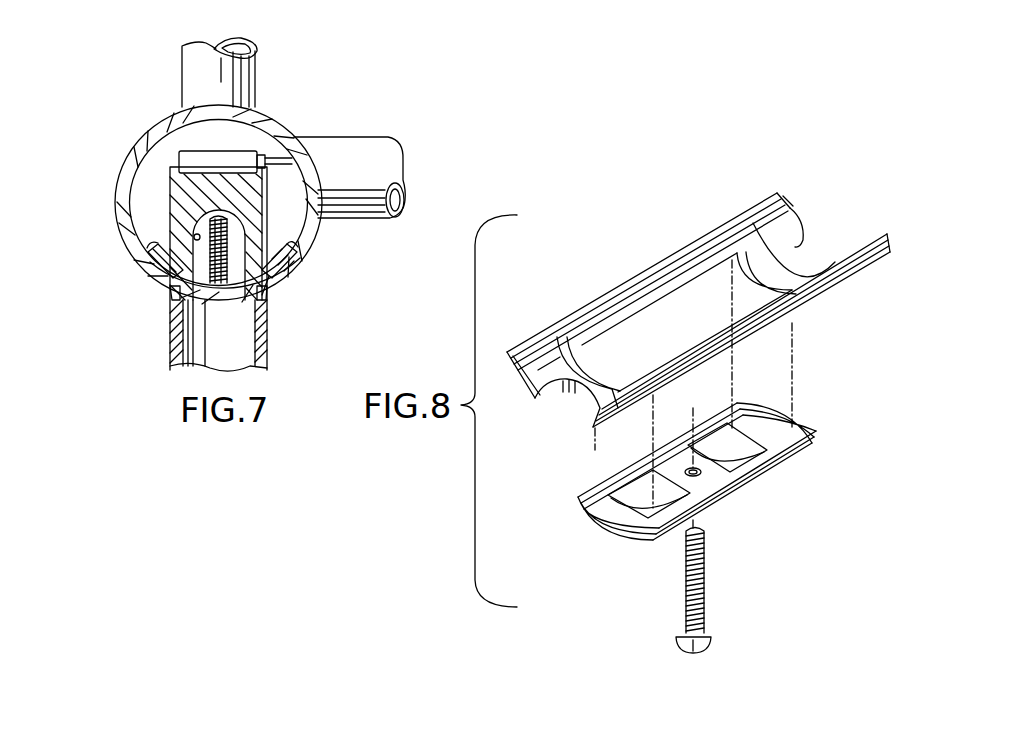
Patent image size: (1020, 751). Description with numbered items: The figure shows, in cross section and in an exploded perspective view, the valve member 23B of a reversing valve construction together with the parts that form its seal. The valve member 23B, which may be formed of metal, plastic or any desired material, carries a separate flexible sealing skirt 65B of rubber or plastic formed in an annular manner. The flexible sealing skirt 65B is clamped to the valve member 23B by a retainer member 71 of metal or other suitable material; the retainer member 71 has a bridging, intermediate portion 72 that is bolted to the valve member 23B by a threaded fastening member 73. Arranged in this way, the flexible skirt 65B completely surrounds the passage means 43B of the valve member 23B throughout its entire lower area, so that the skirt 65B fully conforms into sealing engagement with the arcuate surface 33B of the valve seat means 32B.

In FIG. 7, the valve member 23B is at (175, 196).
In FIG. 7, the passage means 43B is at (194, 235).
In FIG. 7, the flexible sealing skirt 65B is at (150, 255).
In FIG. 8, the flexible sealing skirt 65B is at (801, 232).
In FIG. 7, the retainer member 71 is at (176, 292).
In FIG. 8, the retainer member 71 is at (773, 467).
In FIG. 8, the bridging, intermediate portion 72 is at (708, 478).
In FIG. 7, the threaded fastening member 73 is at (229, 245).
In FIG. 8, the threaded fastening member 73 is at (685, 572).
In FIG. 7, the arcuate surface 33B is at (264, 273).
In FIG. 7, the valve seat means 32B is at (268, 300).